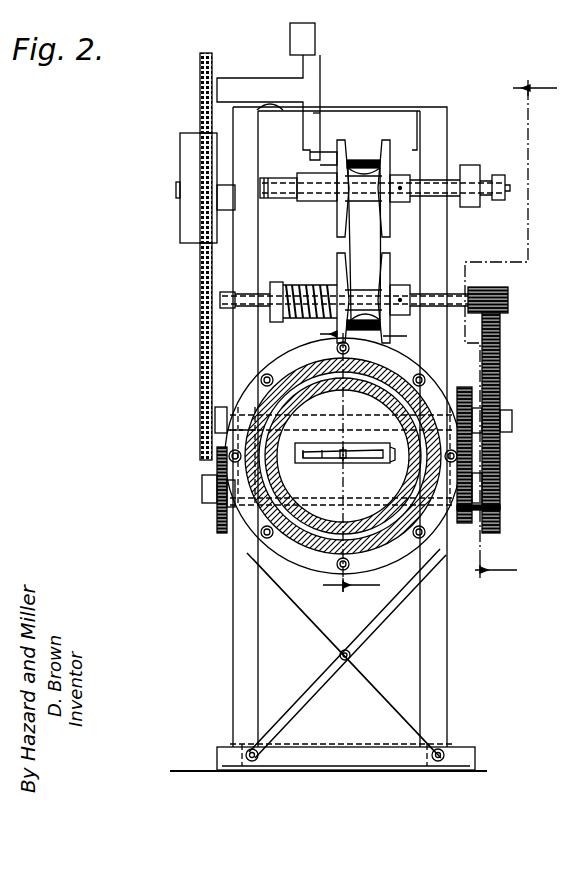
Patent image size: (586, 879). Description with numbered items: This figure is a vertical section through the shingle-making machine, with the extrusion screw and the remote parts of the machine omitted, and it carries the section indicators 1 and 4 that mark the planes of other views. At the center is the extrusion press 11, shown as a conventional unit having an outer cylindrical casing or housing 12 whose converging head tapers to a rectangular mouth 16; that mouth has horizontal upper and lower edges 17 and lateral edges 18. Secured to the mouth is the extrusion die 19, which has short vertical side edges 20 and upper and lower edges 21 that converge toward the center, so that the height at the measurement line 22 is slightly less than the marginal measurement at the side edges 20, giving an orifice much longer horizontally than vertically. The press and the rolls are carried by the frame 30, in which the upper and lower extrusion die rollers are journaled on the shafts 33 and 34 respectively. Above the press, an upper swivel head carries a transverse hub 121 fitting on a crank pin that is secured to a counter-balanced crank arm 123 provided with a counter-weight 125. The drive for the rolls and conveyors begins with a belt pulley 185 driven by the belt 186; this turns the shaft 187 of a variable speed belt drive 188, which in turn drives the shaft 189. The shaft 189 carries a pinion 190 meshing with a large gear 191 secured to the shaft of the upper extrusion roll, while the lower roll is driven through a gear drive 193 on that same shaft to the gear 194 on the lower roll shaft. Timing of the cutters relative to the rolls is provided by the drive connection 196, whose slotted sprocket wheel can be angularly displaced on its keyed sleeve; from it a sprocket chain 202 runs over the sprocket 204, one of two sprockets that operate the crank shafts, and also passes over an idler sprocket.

The section line 1- 1 is at (511, 324).
The section line 4- 4 is at (364, 462).
The extrusion press 11 is at (290, 543).
The cylindrical casing or housing 12 is at (267, 512).
The rectangular mouth 16 is at (357, 467).
The horizontal upper and lower edges 17 is at (313, 443).
The lateral edges 18 is at (395, 454).
The extrusion die 19 is at (322, 460).
The short vertical side edges 20 is at (305, 457).
The upper and lower edges 21 is at (332, 452).
The measurement line 22 is at (343, 452).
The frame 30 is at (236, 652).
The shaft 33 is at (508, 410).
The shaft 34 is at (490, 488).
The transverse hub 121 is at (348, 152).
The counter-balanced crank arm 123 is at (316, 120).
The counter-weight 125 is at (303, 43).
The belt pulley 185 is at (190, 165).
The belt 186 is at (196, 133).
The shaft 187 is at (278, 177).
The variable speed belt drive 188 is at (335, 213).
The shaft 189 is at (420, 295).
The pinion 190 is at (508, 293).
The large gear 191 is at (500, 377).
The gear drive 193 is at (465, 390).
The gear 194 is at (470, 510).
The drive connection 196 is at (205, 412).
The sprocket chain 202 is at (202, 315).
The sprocket 204 is at (199, 80).